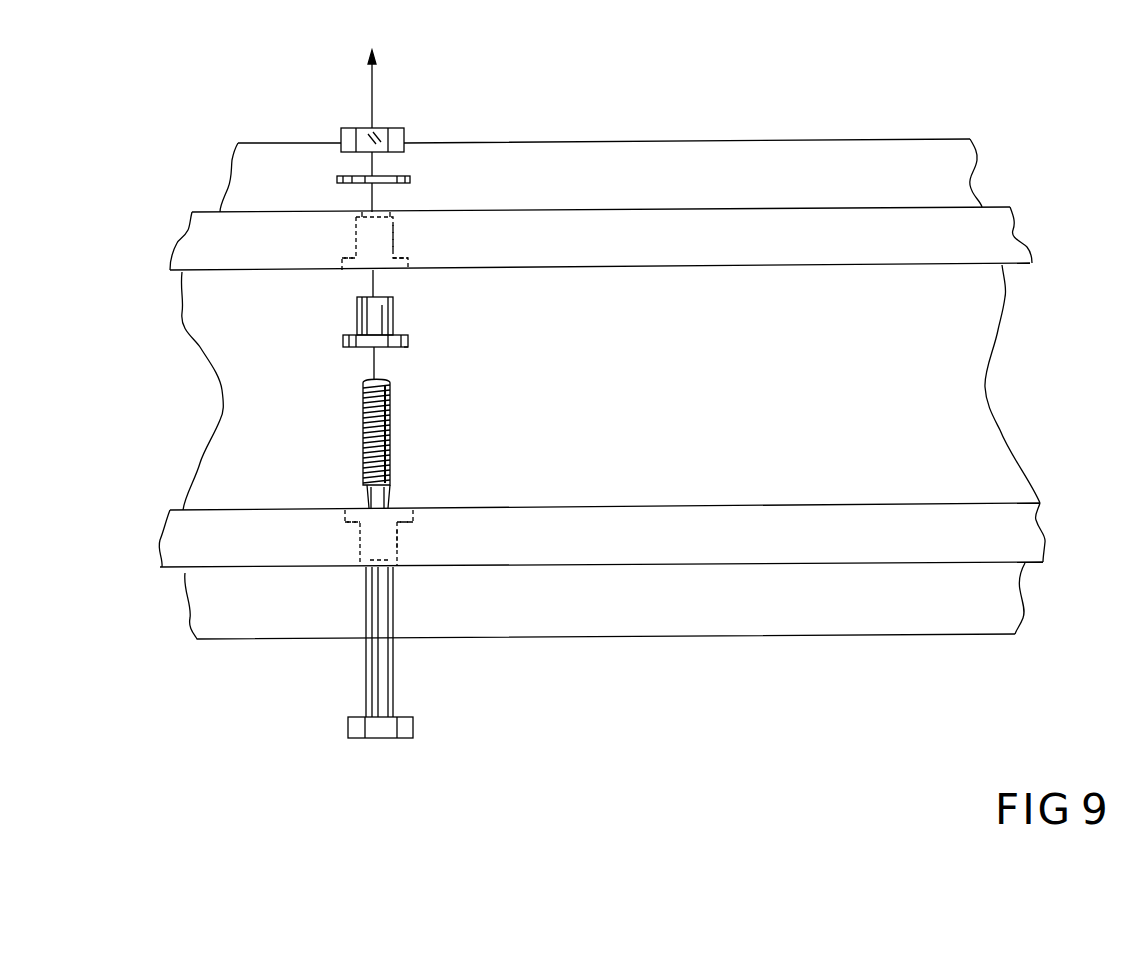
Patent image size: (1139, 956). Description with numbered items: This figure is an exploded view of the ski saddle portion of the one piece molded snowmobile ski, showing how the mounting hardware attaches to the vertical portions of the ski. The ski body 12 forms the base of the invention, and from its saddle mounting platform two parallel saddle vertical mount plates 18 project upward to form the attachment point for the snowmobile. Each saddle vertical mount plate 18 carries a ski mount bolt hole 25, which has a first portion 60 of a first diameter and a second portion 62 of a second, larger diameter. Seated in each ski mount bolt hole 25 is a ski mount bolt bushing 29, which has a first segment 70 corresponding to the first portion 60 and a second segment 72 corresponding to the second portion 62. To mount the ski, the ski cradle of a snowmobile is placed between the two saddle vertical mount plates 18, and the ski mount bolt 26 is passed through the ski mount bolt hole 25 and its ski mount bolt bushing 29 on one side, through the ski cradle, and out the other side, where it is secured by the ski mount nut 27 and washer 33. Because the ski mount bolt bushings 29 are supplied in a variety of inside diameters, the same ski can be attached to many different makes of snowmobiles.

The ski body 12 is at (252, 157).
The saddle vertical mount plates 18 is at (853, 230).
The ski mount bolt hole 25 is at (398, 242).
The ski mount bolt 26 is at (413, 723).
The ski mount nut 27 is at (407, 130).
The ski mount bolt bushing 29 is at (380, 533).
The washer 33 is at (412, 177).
The first portion 60 is at (357, 237).
The second portion 62 is at (343, 260).
The first segment 70 is at (394, 315).
The second segment 72 is at (343, 338).